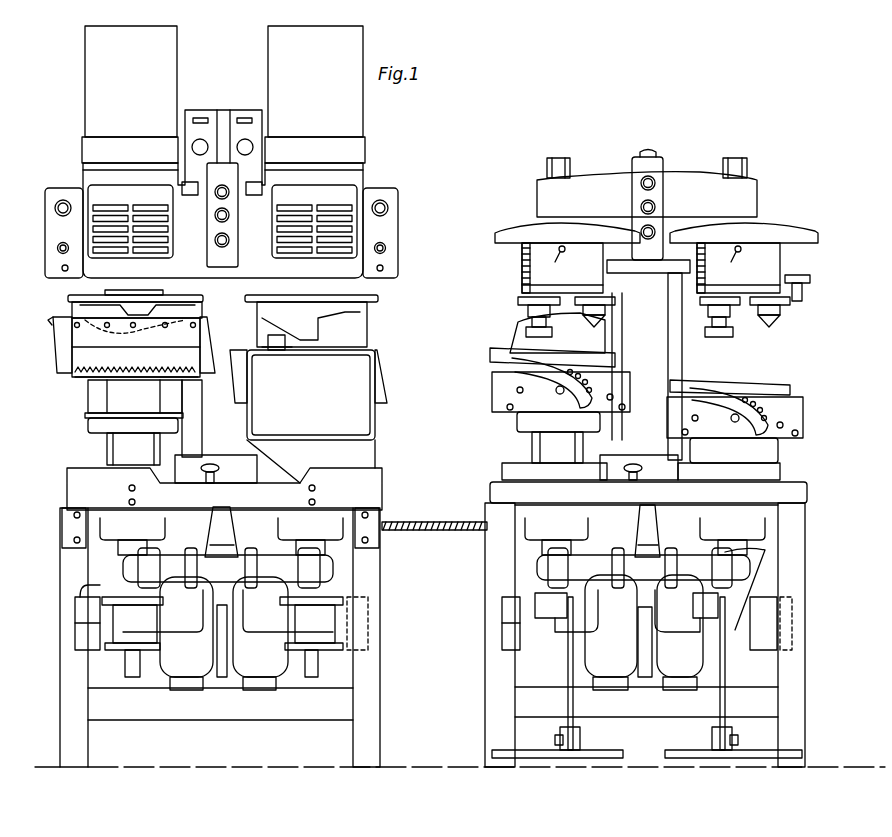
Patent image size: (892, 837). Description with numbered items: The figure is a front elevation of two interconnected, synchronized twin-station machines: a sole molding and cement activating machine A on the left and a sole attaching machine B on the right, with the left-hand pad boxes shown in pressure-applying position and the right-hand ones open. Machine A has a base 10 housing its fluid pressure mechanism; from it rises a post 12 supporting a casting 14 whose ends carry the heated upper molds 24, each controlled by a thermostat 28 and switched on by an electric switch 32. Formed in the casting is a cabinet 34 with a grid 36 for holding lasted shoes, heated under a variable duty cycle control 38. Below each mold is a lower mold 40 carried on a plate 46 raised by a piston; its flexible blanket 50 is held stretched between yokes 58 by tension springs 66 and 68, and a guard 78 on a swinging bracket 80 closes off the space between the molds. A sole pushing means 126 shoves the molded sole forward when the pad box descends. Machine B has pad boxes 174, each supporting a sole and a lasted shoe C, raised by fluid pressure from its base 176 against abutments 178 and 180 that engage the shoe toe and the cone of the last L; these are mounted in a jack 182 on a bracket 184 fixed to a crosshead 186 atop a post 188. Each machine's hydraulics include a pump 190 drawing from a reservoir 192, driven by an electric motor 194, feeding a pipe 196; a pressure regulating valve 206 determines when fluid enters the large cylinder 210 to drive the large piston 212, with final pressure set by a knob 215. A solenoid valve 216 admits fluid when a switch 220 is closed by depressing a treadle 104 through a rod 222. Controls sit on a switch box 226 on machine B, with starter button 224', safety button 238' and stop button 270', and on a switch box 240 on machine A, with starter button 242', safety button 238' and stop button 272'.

The base 10 is at (382, 490).
The post 12 is at (239, 339).
The casting 14 is at (105, 290).
The mold 24 is at (348, 316).
The thermostat 28 is at (388, 248).
The electric switch 32 is at (68, 268).
The cabinet 34 is at (88, 168).
The grid 36 is at (100, 228).
The variable duty cycle control 38 is at (390, 208).
The lower mold 40 is at (207, 313).
The plate 46 is at (183, 424).
The flexible blanket 50 is at (330, 352).
The yoke 58 is at (62, 357).
The tension spring 66 is at (97, 388).
The tension spring 68 is at (165, 383).
The guard 78 is at (378, 330).
The bracket 80 is at (378, 300).
The treadle 104 is at (600, 758).
The sole pushing means 126 is at (275, 352).
The pad box 174 is at (497, 395).
The base 176 is at (490, 494).
The abutment 178 is at (528, 333).
The abutment 180 is at (600, 325).
The jack 182 is at (535, 268).
The bracket 184 is at (525, 228).
The crosshead 186 is at (600, 175).
The post 188 is at (682, 360).
The pump 190 is at (340, 630).
The reservoir 192 is at (245, 705).
The electric motor 194 is at (272, 655).
The pipe 196 is at (220, 660).
The pressure regulating valve 206 is at (222, 525).
The large cylinder 210 is at (138, 528).
The large piston 212 is at (120, 448).
The knob 215 is at (212, 462).
The valve 216 is at (88, 625).
The switch 220 is at (545, 607).
The rod 222 is at (568, 680).
The starter button 224' is at (681, 199).
The switch box 226 is at (660, 165).
The push-pull button 238' is at (383, 188).
The switch box 240 is at (230, 170).
The button 242' is at (262, 243).
The stop button 270' is at (729, 230).
The stop button 272' is at (178, 255).
The sole molding and cement activating machine A is at (372, 182).
The sole attaching machine B is at (703, 138).
The last L is at (612, 327).
The lasted shoe C is at (602, 337).